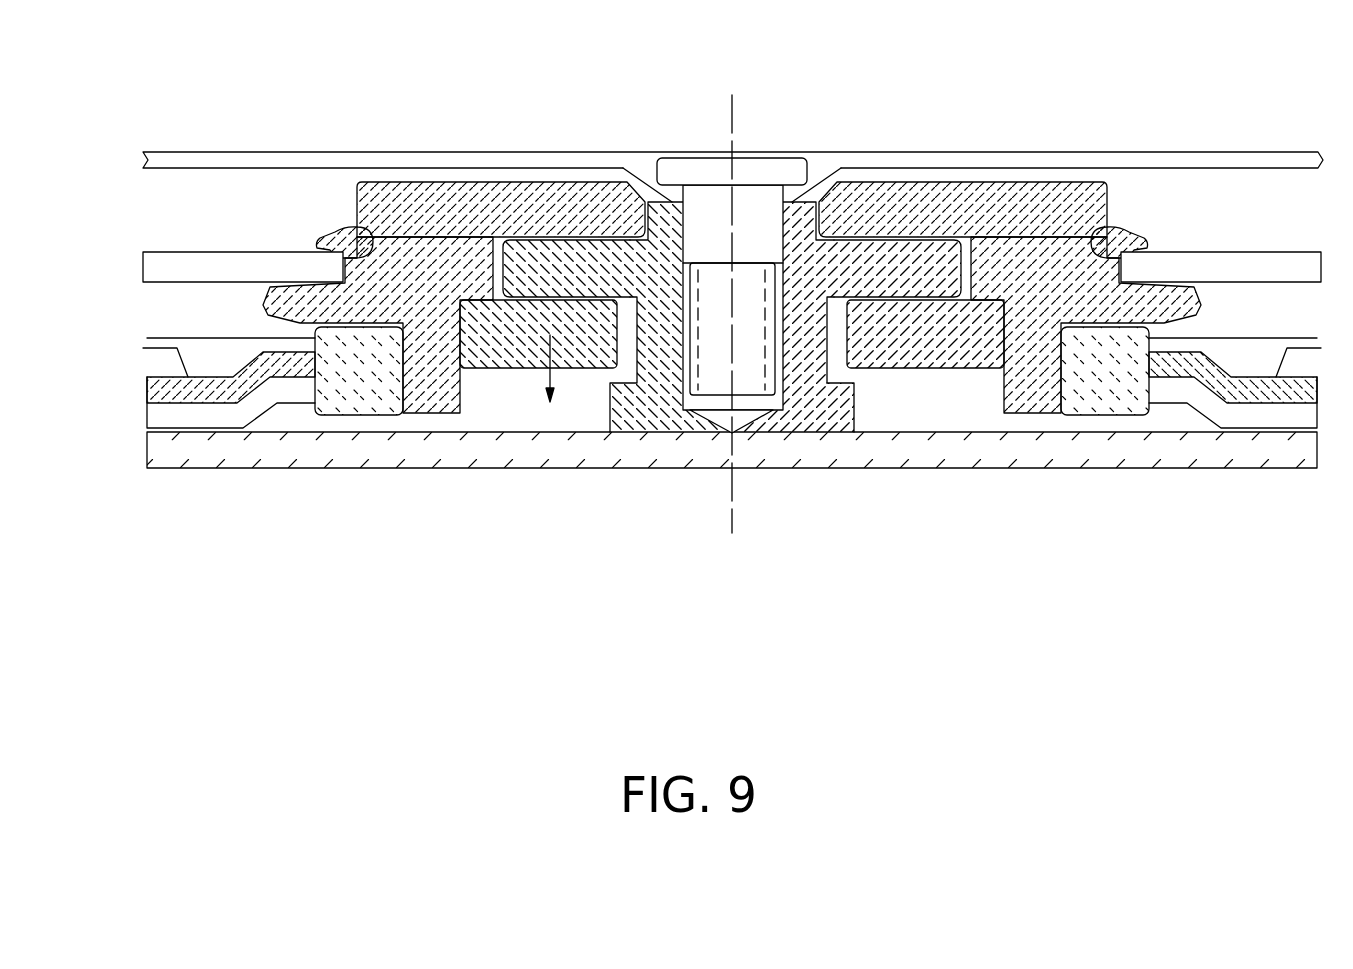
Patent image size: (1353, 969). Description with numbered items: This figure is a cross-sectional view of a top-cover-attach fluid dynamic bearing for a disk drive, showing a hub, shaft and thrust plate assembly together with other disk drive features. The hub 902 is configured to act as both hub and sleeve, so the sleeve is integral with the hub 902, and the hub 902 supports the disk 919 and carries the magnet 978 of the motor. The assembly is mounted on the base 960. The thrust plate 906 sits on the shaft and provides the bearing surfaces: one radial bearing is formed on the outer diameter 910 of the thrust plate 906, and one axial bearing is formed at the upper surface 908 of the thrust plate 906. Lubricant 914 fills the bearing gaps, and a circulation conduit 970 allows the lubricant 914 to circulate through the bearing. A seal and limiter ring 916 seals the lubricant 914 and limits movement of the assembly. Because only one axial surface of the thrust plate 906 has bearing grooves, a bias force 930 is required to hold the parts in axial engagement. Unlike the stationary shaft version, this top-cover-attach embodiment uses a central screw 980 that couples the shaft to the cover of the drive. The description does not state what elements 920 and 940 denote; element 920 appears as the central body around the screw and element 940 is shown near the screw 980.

The hub 902 is at (1047, 380).
The thrust plate 906 is at (537, 273).
The upper surface 908 is at (540, 203).
The outer diameter 910 is at (497, 278).
The lubricant 914 is at (927, 297).
The seal and limiter ring 916 is at (597, 332).
The disk 919 is at (1220, 272).
The central body 920 is at (640, 360).
The bias force 930 is at (528, 363).
The fastening bolt 940 is at (682, 462).
The base 960 is at (243, 448).
The circulation conduit 970 is at (900, 273).
The magnet 978 is at (357, 396).
The central screw 980 is at (826, 450).